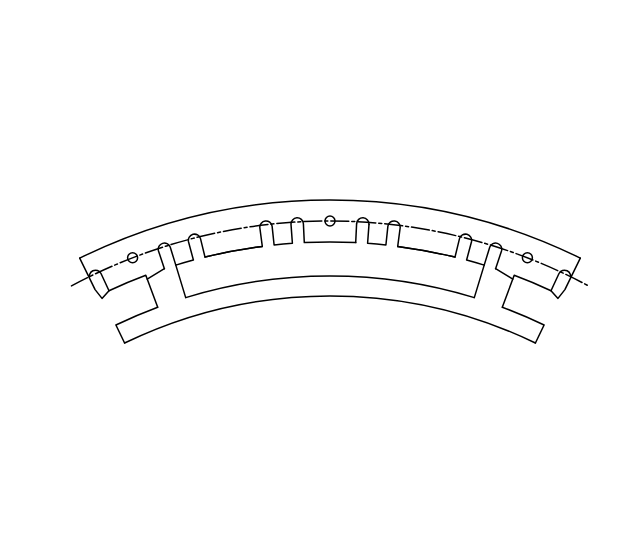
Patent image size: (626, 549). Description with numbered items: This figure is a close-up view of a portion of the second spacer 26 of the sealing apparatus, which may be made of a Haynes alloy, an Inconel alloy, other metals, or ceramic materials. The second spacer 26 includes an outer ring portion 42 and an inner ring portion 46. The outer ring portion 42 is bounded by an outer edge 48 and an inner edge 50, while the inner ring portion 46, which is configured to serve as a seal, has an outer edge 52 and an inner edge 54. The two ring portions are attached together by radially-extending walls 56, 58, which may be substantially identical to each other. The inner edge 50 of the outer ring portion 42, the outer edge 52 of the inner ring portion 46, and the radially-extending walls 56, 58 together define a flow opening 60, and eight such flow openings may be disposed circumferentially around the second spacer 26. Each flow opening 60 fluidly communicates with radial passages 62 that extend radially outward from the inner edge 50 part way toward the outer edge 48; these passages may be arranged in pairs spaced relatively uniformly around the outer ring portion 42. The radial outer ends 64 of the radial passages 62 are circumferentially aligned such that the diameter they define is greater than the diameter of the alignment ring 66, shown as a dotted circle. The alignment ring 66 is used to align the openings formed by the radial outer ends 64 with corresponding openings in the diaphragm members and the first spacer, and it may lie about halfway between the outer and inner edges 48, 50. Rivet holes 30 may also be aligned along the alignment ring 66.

The second spacer 26 is at (478, 146).
The rivet holes 30 is at (330, 216).
The outer ring portion 42 is at (432, 218).
The inner ring portion 46 is at (332, 280).
The outer edge 48 is at (502, 222).
The inner edge 50 is at (435, 256).
The outer edge 52 is at (230, 287).
The inner edge 54 is at (207, 311).
The radially-extending wall 56 is at (147, 295).
The radially-extending wall 58 is at (495, 292).
The flow opening 60 is at (315, 258).
The radial passages 62 is at (393, 240).
The radial outer ends 64 is at (363, 216).
The alignment ring 66 is at (230, 230).